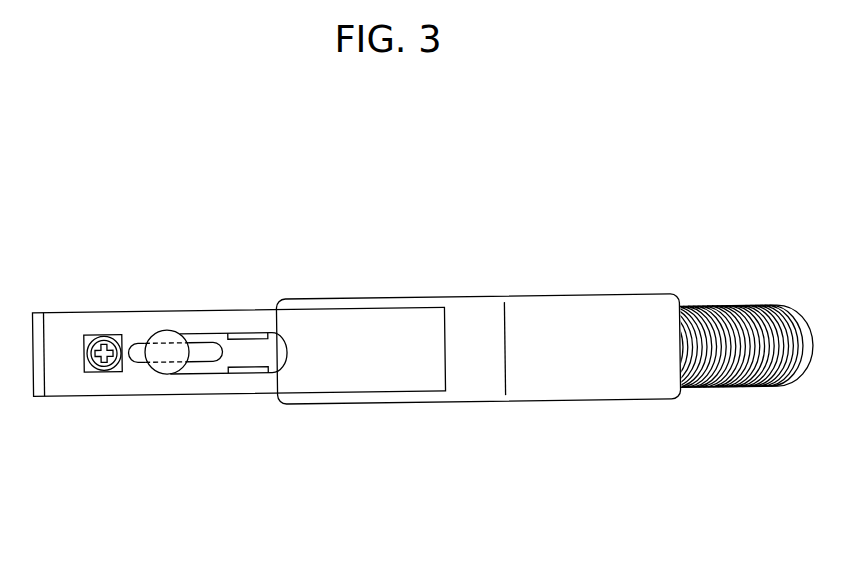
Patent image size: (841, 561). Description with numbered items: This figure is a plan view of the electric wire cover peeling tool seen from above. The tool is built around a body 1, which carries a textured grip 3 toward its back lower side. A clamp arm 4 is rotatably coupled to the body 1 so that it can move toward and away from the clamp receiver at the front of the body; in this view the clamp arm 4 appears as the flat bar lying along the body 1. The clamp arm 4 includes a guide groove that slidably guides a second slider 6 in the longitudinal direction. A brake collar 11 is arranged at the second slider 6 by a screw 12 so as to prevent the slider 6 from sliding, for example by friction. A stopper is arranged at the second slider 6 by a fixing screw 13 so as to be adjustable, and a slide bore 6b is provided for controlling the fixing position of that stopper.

The body 1 is at (570, 404).
The grip 3 is at (750, 391).
The clamp arm 4 is at (235, 384).
The second slider 6 is at (248, 347).
The slide bore 6b is at (202, 343).
The brake collar 11 is at (128, 333).
The screw 12 is at (97, 333).
The fixing screw 13 is at (164, 371).